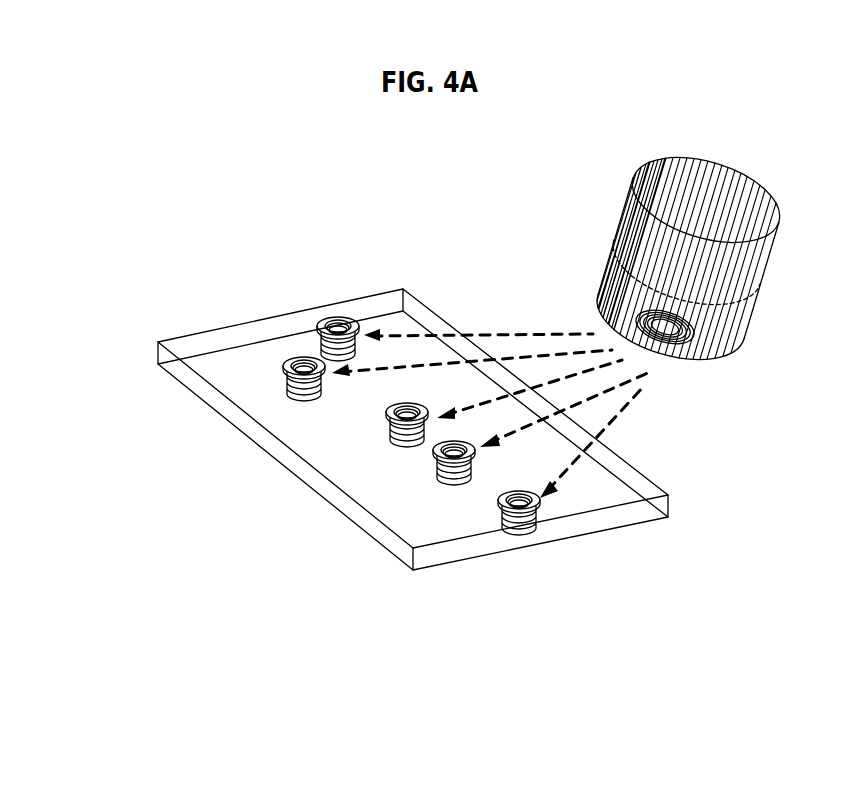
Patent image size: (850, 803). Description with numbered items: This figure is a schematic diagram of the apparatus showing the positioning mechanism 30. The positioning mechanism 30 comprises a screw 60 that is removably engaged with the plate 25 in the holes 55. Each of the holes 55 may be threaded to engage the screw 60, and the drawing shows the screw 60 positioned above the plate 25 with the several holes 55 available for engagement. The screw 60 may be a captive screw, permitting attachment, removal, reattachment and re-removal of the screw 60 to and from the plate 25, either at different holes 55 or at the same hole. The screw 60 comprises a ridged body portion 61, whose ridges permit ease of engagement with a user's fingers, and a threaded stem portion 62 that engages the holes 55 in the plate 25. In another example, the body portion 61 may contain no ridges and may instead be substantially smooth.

The plate 25 is at (158, 357).
The holes 55 is at (317, 335).
The positioning mechanism 30 is at (695, 255).
The screw 60 is at (675, 155).
The ridged body portion 61 is at (745, 258).
The threaded stem portion 62 is at (672, 338).